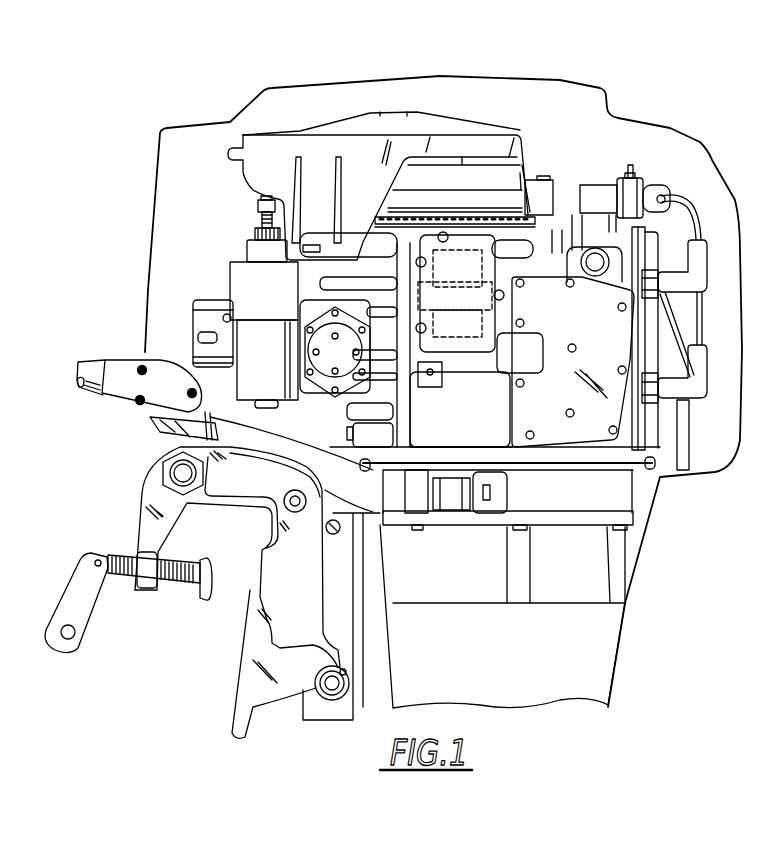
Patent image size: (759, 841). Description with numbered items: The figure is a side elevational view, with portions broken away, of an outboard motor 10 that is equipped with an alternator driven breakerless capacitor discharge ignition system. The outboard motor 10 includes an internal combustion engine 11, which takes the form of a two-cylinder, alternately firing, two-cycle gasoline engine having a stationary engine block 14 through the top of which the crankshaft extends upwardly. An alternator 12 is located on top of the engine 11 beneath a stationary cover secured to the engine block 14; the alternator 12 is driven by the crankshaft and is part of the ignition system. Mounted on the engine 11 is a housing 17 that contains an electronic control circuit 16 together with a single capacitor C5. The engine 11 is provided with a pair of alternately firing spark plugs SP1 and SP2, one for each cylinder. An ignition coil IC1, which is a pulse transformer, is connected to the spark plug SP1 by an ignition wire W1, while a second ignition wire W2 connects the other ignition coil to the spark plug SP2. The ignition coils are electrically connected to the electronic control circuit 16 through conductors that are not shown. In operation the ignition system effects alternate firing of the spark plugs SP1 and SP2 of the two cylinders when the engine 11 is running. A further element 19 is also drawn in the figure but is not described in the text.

The outboard motor 10 is at (632, 97).
The internal combustion engine 11 is at (600, 455).
The alternator 12 is at (535, 167).
The engine block 14 is at (564, 455).
The electronic control circuit 16 is at (467, 343).
The housing 17 is at (497, 320).
The mounting block 19 is at (546, 213).
The ignition coil IC1 is at (607, 184).
The ignition wire W1 is at (690, 210).
The ignition wire W2 is at (700, 337).
The spark plug SP1 is at (658, 278).
The spark plug SP2 is at (658, 400).
The capacitor C5 is at (460, 292).